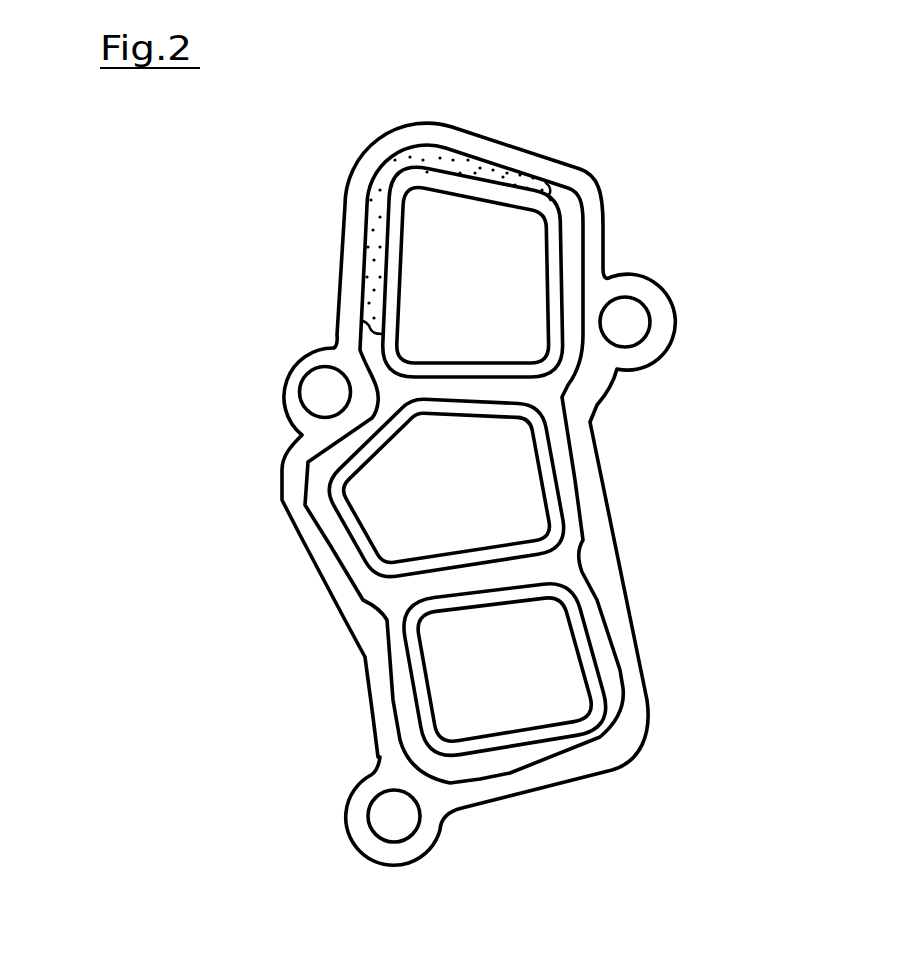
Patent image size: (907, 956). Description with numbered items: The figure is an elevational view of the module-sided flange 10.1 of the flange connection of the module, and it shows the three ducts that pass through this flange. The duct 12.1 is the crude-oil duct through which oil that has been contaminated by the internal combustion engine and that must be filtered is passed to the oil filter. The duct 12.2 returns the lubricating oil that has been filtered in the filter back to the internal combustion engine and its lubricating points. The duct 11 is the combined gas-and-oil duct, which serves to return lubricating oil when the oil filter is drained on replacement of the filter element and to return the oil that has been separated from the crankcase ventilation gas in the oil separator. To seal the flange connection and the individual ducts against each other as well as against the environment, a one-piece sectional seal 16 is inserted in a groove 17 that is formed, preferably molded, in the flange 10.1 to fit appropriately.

The module-sided flange 10.1 is at (725, 278).
The combined gas-and-oil duct 11 is at (527, 690).
The crude-oil duct 12.1 is at (522, 298).
The duct 12.2 is at (440, 498).
The one-piece sectional seal 16 is at (368, 254).
The groove 17 is at (538, 752).